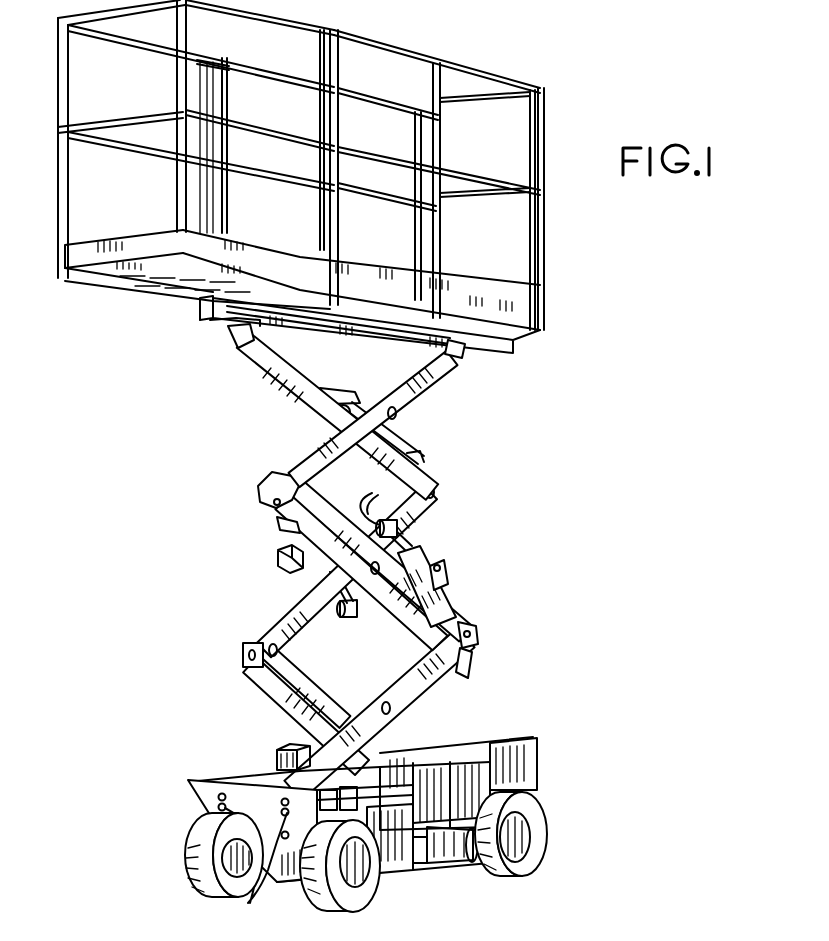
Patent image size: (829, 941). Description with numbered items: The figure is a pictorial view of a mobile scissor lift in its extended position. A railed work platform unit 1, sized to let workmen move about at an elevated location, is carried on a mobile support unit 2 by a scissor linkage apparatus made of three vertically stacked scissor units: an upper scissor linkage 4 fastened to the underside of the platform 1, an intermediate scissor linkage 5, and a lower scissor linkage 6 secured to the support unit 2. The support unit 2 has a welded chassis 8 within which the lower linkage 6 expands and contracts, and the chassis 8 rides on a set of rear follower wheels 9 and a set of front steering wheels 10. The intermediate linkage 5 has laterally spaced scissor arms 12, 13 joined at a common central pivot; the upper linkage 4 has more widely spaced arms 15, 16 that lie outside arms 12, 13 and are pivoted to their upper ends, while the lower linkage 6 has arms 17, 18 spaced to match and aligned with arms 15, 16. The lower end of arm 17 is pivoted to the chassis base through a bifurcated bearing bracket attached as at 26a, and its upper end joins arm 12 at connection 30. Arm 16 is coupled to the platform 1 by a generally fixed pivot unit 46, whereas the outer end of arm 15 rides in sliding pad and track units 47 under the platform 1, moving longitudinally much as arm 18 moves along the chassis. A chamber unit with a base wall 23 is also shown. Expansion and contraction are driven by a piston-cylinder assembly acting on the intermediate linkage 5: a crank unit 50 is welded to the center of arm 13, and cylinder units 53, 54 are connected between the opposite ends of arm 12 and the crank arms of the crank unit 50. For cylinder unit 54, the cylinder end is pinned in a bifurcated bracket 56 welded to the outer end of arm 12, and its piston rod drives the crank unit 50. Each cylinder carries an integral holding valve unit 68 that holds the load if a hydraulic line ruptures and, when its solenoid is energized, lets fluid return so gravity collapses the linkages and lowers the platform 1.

The work platform unit 1 is at (301, 176).
The mobile support unit 2 is at (125, 868).
The upper scissor linkage 4 is at (149, 441).
The intermediate scissor linkage 5 is at (211, 581).
The lower scissor linkage 6 is at (217, 694).
The chassis 8 is at (177, 792).
The rear follower wheels 9 is at (190, 836).
The front steering wheels 10 is at (520, 864).
The scissor arm 12 is at (460, 630).
The scissor arm 13 is at (270, 634).
The scissor arm 15 is at (430, 408).
The scissor arm 16 is at (293, 407).
The scissor arm 17 is at (430, 682).
The scissor arm 18 is at (266, 690).
The base wall 23 is at (340, 705).
The bracket attachment 26a is at (256, 871).
The connection 30 is at (462, 668).
The fixed pivot unit 46 is at (228, 342).
The sliding pad and track units 47 is at (413, 362).
The crank unit 50 is at (356, 501).
The cylinder unit 53 is at (292, 522).
The cylinder unit 54 is at (434, 623).
The bifurcated bracket 56 is at (470, 634).
The holding valve unit 68 is at (446, 590).